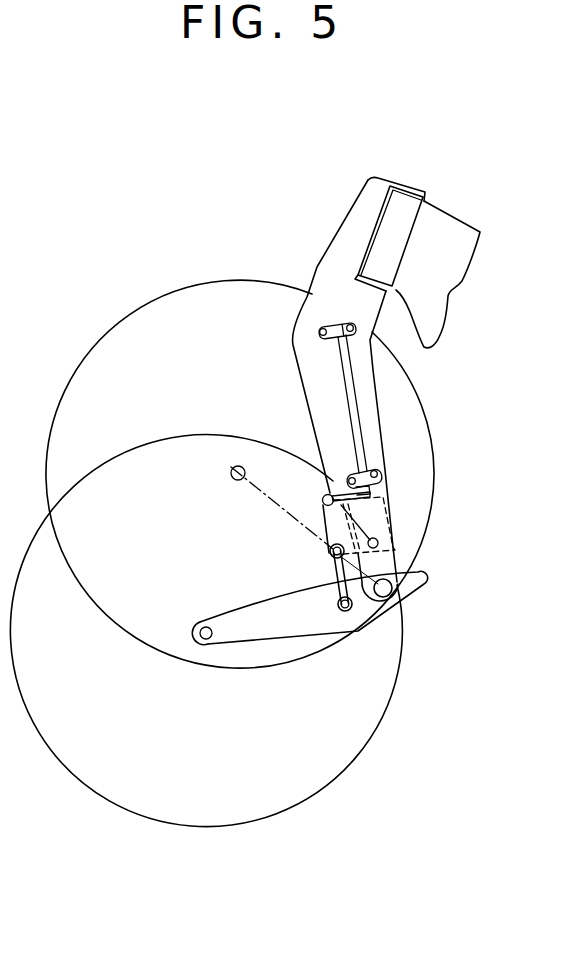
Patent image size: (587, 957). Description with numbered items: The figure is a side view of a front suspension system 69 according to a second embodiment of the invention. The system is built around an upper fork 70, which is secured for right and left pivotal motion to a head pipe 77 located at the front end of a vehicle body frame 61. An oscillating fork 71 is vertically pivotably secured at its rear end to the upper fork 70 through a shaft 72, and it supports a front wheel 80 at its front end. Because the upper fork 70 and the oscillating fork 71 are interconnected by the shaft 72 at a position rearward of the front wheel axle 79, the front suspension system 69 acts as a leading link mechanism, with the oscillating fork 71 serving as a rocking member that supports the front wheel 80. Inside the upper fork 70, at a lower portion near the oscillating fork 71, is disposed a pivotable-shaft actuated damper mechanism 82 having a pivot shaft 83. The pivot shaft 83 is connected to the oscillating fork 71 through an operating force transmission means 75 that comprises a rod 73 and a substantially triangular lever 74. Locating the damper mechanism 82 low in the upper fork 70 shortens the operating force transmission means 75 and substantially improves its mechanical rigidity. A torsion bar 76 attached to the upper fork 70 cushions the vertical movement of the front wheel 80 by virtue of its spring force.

The vehicle body frame 61 is at (462, 250).
The front suspension system 69 is at (403, 425).
The upper fork 70 is at (320, 388).
The oscillating fork 71 is at (317, 620).
The shaft 72 is at (414, 580).
The rod 73 is at (336, 580).
The substantially triangular lever 74 is at (297, 500).
The operating force transmission means 75 is at (330, 551).
The torsion bar 76 is at (338, 358).
The head pipe 77 is at (390, 210).
The front wheel axle 79 is at (203, 644).
The front wheel 80 is at (147, 820).
The pivotable-shaft actuated damper mechanism 82 is at (398, 517).
The pivot shaft 83 is at (379, 545).